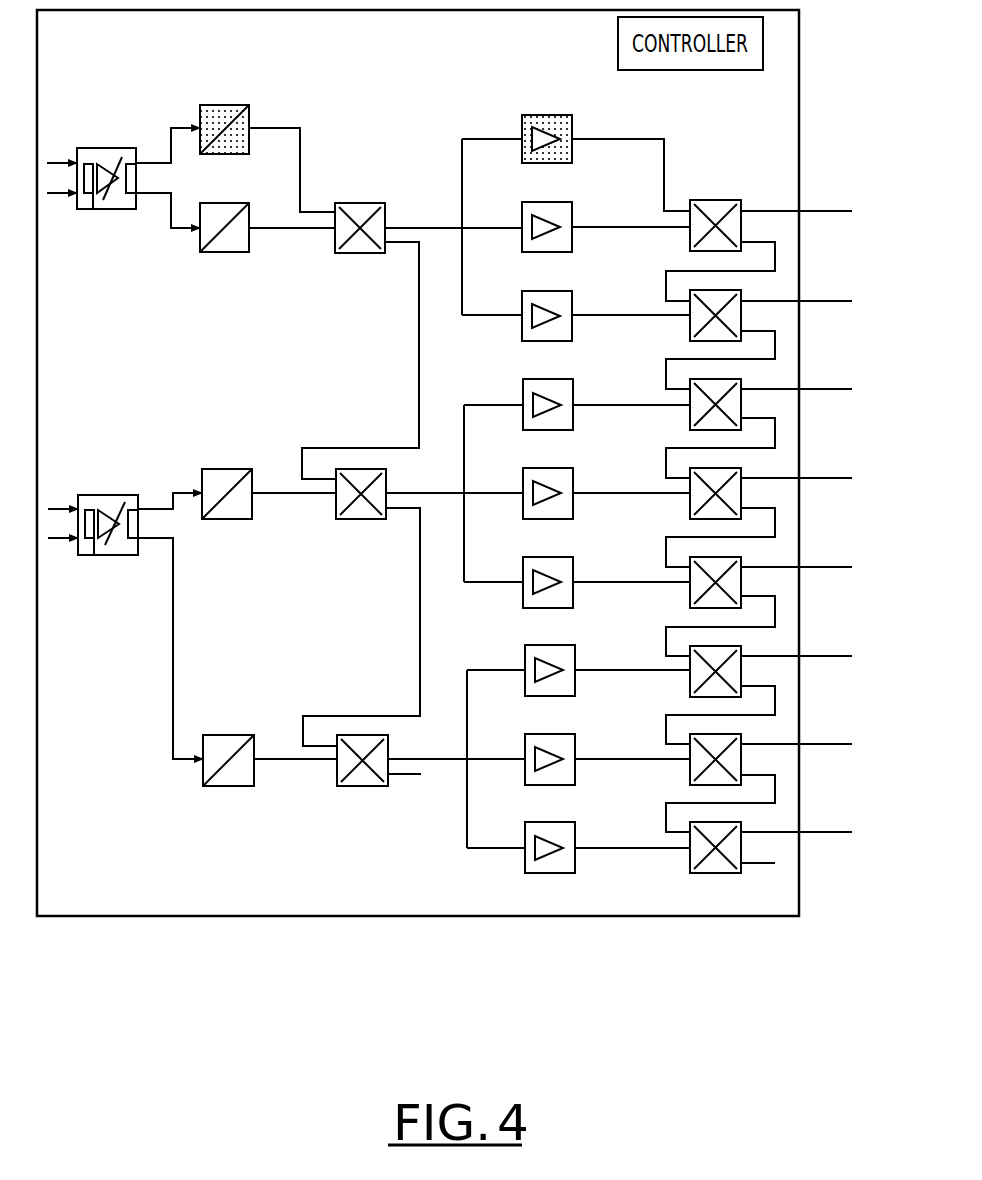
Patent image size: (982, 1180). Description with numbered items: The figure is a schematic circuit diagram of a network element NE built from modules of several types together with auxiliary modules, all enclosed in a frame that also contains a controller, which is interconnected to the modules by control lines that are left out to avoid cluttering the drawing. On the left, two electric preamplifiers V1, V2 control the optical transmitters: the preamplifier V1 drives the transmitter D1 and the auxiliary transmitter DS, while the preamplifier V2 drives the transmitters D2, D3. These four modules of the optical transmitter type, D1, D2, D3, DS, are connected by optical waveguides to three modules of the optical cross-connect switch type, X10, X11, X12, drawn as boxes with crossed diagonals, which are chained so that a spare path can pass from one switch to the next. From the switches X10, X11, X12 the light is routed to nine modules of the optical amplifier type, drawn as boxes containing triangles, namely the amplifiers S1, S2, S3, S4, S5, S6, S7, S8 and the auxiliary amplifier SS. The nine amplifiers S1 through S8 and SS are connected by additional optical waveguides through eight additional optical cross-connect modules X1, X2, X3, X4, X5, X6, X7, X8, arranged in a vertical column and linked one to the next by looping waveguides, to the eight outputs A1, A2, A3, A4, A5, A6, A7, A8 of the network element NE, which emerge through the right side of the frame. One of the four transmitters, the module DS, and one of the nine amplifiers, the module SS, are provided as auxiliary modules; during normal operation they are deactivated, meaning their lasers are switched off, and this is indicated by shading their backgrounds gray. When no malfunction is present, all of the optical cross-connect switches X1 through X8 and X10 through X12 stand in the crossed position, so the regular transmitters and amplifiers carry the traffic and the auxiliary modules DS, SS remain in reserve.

The network element NE is at (792, 31).
The electric preamplifier V1 is at (107, 157).
The electric preamplifier V2 is at (108, 502).
The auxiliary module (optical transmitter) DS is at (231, 105).
The optical transmitter module D1 is at (228, 252).
The optical transmitter module D2 is at (228, 519).
The optical transmitter module D3 is at (230, 786).
The optical cross-connect switch module X10 is at (360, 253).
The optical cross-connect switch module X11 is at (360, 519).
The optical cross-connect switch module X12 is at (364, 786).
The auxiliary module (optical amplifier) SS is at (522, 121).
The optical amplifier module S1 is at (522, 210).
The optical amplifier module S2 is at (522, 299).
The optical amplifier module S3 is at (523, 387).
The optical amplifier module S4 is at (523, 476).
The optical amplifier module S5 is at (523, 565).
The optical amplifier module S6 is at (525, 653).
The optical amplifier module S7 is at (525, 742).
The optical amplifier module S8 is at (525, 830).
The additional optical cross-connect module X1 is at (697, 237).
The additional optical cross-connect module X2 is at (697, 327).
The additional optical cross-connect module X3 is at (697, 416).
The additional optical cross-connect module X4 is at (697, 505).
The additional optical cross-connect module X5 is at (697, 594).
The additional optical cross-connect module X6 is at (697, 683).
The additional optical cross-connect module X7 is at (697, 771).
The additional optical cross-connect module X8 is at (697, 859).
The output A1 is at (796, 200).
The output A2 is at (796, 290).
The output A3 is at (796, 378).
The output A4 is at (796, 467).
The output A5 is at (796, 556).
The output A6 is at (796, 645).
The output A7 is at (796, 733).
The output A8 is at (796, 821).